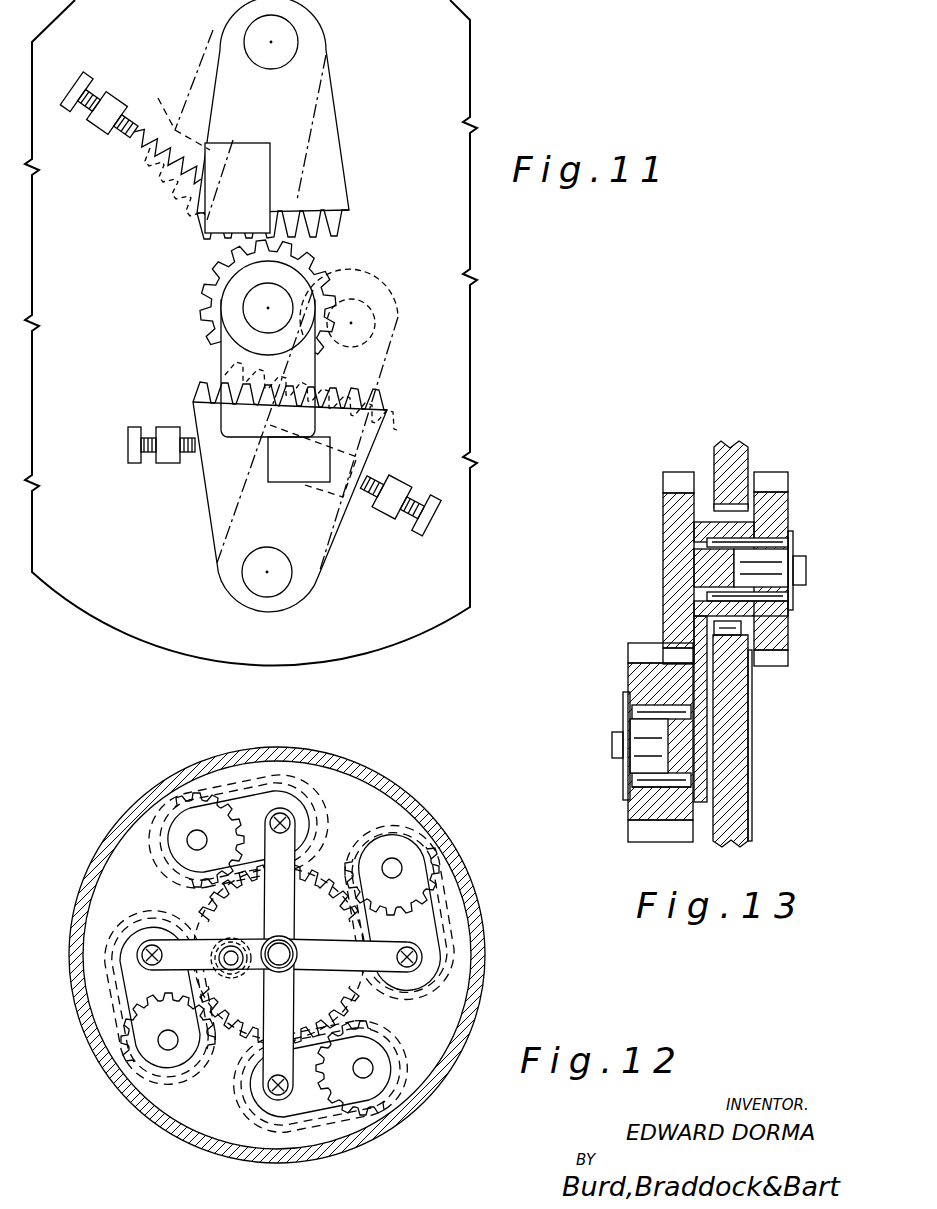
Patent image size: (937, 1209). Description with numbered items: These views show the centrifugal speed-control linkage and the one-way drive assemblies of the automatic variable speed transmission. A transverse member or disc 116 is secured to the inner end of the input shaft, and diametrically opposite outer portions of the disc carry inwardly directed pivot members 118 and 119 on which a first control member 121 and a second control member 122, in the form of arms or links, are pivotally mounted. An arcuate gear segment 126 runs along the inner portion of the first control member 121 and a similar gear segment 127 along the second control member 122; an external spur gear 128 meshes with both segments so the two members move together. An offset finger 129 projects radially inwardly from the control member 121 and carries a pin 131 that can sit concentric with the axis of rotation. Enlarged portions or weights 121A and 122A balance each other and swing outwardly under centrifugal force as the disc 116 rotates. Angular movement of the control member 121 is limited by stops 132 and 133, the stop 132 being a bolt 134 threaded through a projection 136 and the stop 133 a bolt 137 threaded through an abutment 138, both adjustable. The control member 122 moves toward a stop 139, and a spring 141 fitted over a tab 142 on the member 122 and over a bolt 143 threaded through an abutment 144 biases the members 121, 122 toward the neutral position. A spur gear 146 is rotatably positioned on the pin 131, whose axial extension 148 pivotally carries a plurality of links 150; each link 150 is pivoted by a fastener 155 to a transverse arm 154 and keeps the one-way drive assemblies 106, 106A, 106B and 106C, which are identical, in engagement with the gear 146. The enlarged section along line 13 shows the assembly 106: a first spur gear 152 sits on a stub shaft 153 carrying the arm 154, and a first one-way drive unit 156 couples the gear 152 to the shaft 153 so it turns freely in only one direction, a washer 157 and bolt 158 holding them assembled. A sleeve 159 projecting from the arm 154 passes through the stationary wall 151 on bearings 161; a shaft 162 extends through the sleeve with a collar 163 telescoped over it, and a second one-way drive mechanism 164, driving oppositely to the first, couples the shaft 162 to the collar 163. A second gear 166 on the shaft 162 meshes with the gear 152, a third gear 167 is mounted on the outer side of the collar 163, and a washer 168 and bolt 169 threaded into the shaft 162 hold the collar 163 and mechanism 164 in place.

In FIG. 12, the section line 13 is at (383, 1065).
In FIG. 12, the one-way drive assembly 106 is at (288, 961).
In FIG. 13, the one-way drive assembly 106 is at (706, 623).
In FIG. 12, the one-way drive assembly 106A is at (447, 905).
In FIG. 12, the one-way drive assembly 106B is at (233, 795).
In FIG. 12, the one-way drive assembly 106C is at (116, 1003).
In FIG. 11, the transverse member 116 is at (140, 627).
In FIG. 11, the pivot member 118 is at (253, 580).
In FIG. 11, the pivot member 119 is at (283, 35).
In FIG. 11, the first control member 121 is at (287, 491).
In FIG. 11, the enlarged portion 121A is at (397, 437).
In FIG. 11, the second control member 122 is at (275, 119).
In FIG. 11, the enlarged portion 122A is at (203, 156).
In FIG. 11, the arcuate gear segment 126 is at (200, 388).
In FIG. 11, the gear segment 127 is at (343, 220).
In FIG. 11, the external spur gear 128 is at (213, 278).
In FIG. 11, the offset finger 129 is at (250, 352).
In FIG. 11, the pin 131 is at (260, 310).
In FIG. 11, the stop 132 is at (135, 449).
In FIG. 11, the stop 133 is at (441, 494).
In FIG. 11, the bolt 134 is at (130, 447).
In FIG. 11, the projection 136 is at (177, 428).
In FIG. 11, the bolt 137 is at (432, 517).
In FIG. 11, the abutment 138 is at (397, 481).
In FIG. 11, the stop 139 is at (112, 142).
In FIG. 11, the spring 141 is at (143, 147).
In FIG. 11, the tab 142 is at (187, 187).
In FIG. 11, the bolt 143 is at (70, 87).
In FIG. 11, the abutment 144 is at (97, 133).
In FIG. 12, the spur gear 146 is at (327, 990).
In FIG. 12, the axial extension 148 is at (236, 960).
In FIG. 12, the links 150 is at (283, 902).
In FIG. 13, the stationary wall 151 is at (730, 759).
In FIG. 12, the first spur gear 152 is at (303, 1122).
In FIG. 13, the first spur gear 152 is at (641, 677).
In FIG. 13, the stub shaft 153 is at (646, 739).
In FIG. 13, the transverse arm 154 is at (703, 653).
In FIG. 12, the fastener 155 is at (412, 958).
In FIG. 13, the first one-way drive unit 156 is at (659, 786).
In FIG. 13, the washer 157 is at (624, 775).
In FIG. 13, the bolt 158 is at (612, 742).
In FIG. 13, the sleeve 159 is at (712, 519).
In FIG. 13, the bearings 161 is at (720, 626).
In FIG. 13, the shaft 162 is at (777, 558).
In FIG. 13, the collar 163 is at (727, 608).
In FIG. 13, the second one-way drive mechanism 164 is at (759, 538).
In FIG. 13, the second gear 166 is at (675, 508).
In FIG. 13, the third gear 167 is at (781, 501).
In FIG. 13, the washer 168 is at (793, 596).
In FIG. 13, the bolt 169 is at (806, 563).